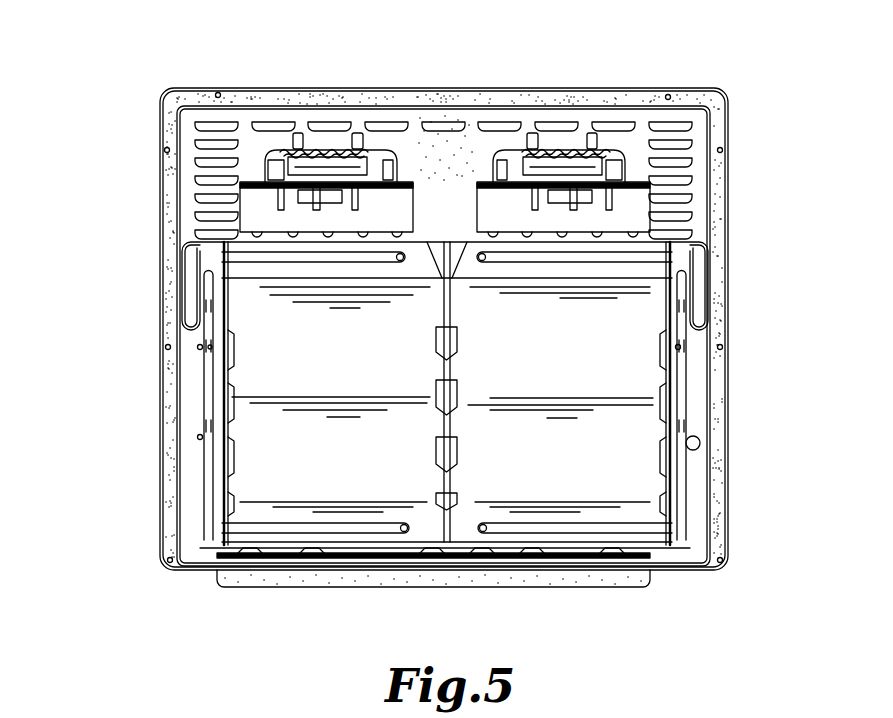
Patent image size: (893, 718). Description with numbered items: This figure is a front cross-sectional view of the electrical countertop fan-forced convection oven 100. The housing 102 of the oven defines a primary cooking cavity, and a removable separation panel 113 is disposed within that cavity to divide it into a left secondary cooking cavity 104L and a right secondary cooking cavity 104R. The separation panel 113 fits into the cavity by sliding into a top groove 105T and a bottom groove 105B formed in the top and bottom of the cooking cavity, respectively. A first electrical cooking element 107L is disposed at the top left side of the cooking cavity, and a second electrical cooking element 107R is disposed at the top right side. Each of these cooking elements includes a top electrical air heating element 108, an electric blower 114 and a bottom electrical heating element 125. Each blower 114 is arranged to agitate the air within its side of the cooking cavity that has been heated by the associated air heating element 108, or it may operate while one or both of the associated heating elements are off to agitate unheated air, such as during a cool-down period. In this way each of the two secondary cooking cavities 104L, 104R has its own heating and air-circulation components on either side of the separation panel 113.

The convection oven 100 is at (245, 597).
The housing 102 is at (728, 373).
The left secondary cooking cavity 104L is at (355, 386).
The right secondary cooking cavity 104R is at (600, 386).
The top groove 105T is at (467, 283).
The bottom groove 105B is at (487, 552).
The first electrical cooking element 107L is at (409, 182).
The second electrical cooking element 107R is at (637, 182).
The top electrical air heating element 108 is at (608, 228).
The separation panel 113 is at (452, 453).
The electric blower 114 is at (347, 167).
The bottom electrical heating element 125 is at (363, 537).